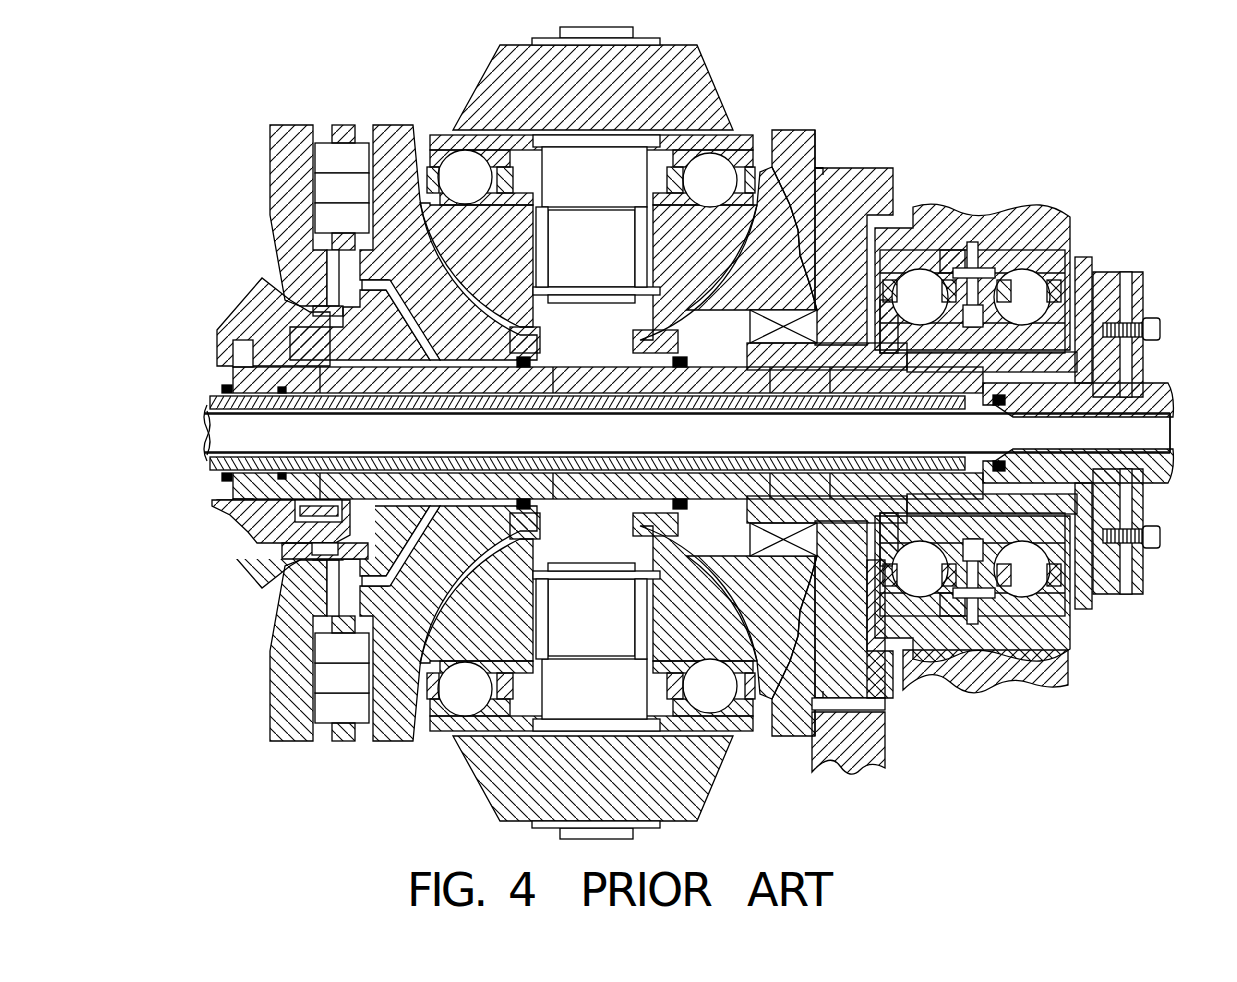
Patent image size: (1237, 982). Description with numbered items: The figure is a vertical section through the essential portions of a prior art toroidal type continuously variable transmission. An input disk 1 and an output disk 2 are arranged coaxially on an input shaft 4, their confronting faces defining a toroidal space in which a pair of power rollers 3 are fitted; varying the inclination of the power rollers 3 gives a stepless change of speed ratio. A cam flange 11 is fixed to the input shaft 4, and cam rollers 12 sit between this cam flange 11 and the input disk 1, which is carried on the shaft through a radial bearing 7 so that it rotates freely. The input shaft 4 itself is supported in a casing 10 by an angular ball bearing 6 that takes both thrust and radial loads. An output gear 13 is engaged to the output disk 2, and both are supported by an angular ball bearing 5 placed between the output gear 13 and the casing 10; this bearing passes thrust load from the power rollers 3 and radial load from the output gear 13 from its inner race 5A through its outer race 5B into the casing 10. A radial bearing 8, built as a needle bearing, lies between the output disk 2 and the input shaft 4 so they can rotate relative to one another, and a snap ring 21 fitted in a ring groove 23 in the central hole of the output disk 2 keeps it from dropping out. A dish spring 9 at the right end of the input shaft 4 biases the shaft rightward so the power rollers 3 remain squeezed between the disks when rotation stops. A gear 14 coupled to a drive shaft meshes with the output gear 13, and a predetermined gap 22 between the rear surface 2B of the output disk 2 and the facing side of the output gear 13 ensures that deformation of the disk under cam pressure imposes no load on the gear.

The input disk 1 is at (390, 125).
The output disk 2 is at (790, 130).
The rear surface 2B is at (823, 162).
The power rollers 3 is at (420, 200).
The input shaft 4 is at (1168, 400).
The angular ball bearing 5 is at (923, 283).
The inner race 5A is at (883, 317).
The outer race 5B is at (947, 257).
The angular ball bearing 6 is at (1027, 287).
The radial bearing 7 is at (510, 338).
The radial bearing 8 is at (713, 363).
The dish spring 9 is at (1097, 293).
The casing 10 is at (977, 227).
The cam flange 11 is at (283, 125).
The cam rollers 12 is at (342, 143).
The output gear 13 is at (880, 168).
The gear 14 is at (887, 735).
The snap ring 21 is at (673, 360).
The gap 22 is at (823, 170).
The ring groove 23 is at (677, 353).